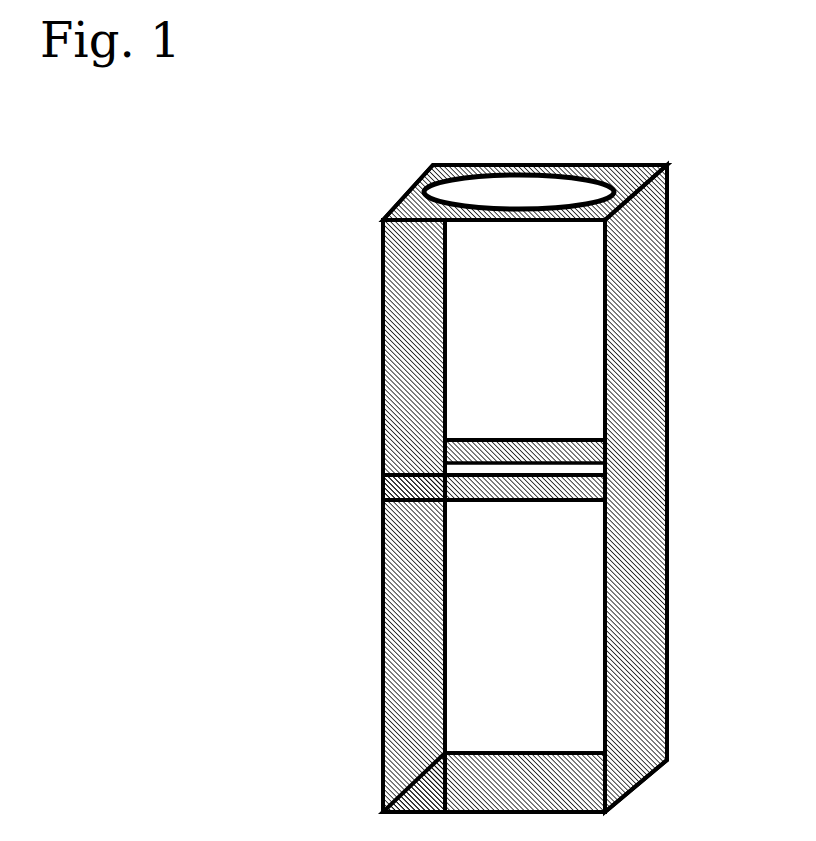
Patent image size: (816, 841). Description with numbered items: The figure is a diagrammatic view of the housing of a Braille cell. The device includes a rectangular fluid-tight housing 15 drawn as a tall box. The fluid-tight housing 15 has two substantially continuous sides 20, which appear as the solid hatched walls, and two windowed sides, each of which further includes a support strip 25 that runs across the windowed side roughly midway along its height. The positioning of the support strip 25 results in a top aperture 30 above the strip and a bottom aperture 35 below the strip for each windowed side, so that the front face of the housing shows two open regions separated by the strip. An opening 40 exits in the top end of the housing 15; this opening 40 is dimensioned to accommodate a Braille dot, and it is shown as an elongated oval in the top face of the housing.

The fluid-tight housing 15 is at (300, 160).
The substantially continuous sides 20 is at (383, 320).
The support strip 25 is at (607, 497).
The top aperture 30 is at (500, 385).
The bottom aperture 35 is at (502, 553).
The opening in the top end of the housing 40 is at (520, 190).